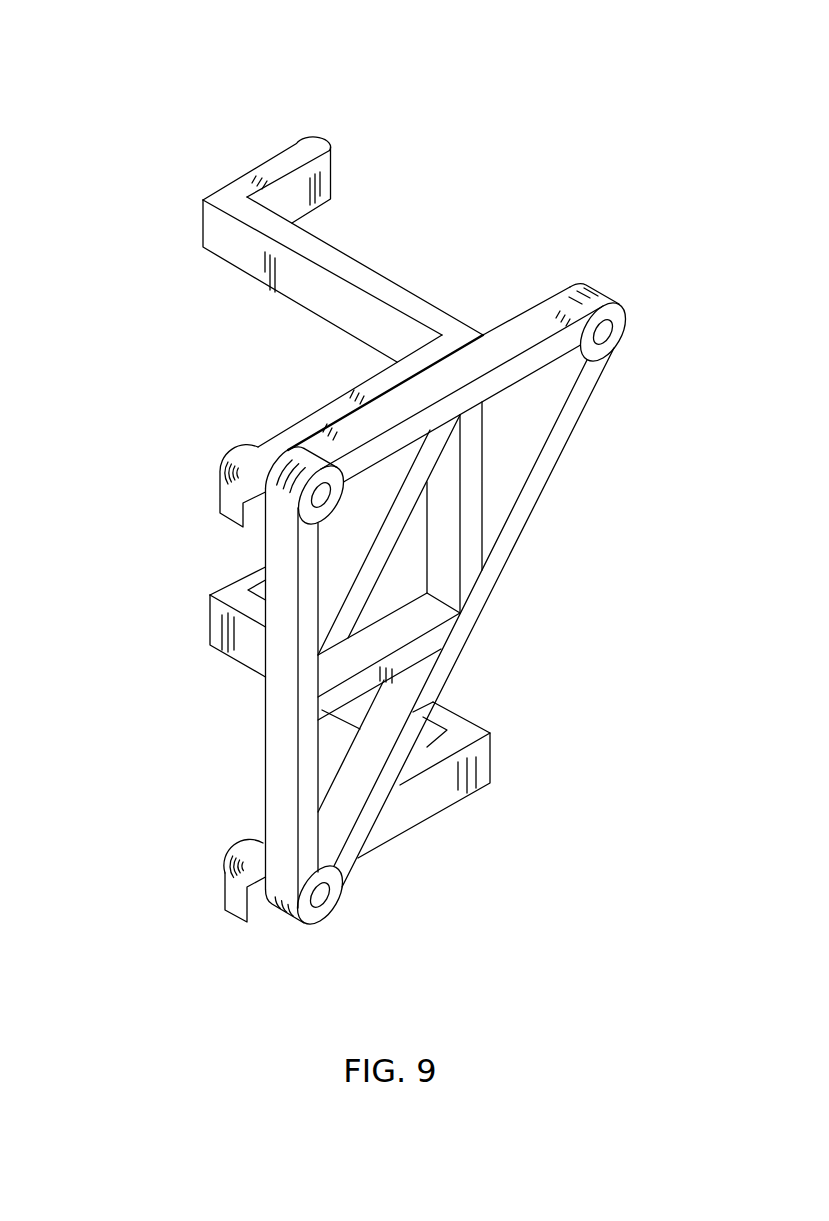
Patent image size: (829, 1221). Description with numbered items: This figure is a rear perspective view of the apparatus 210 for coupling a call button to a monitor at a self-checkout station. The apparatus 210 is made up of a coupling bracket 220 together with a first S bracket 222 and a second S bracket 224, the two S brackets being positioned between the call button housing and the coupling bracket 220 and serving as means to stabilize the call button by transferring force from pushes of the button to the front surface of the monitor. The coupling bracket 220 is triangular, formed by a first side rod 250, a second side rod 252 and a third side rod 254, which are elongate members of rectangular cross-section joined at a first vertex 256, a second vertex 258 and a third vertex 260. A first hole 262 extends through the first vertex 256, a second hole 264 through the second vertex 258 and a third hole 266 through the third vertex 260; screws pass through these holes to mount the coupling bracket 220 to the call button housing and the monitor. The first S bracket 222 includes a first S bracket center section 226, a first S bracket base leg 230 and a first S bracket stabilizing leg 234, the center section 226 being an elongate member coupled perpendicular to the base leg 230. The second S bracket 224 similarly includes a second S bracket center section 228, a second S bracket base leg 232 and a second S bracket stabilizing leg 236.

The apparatus for coupling call button to monitor 210 is at (422, 89).
The coupling bracket 220 is at (580, 522).
The first S bracket 222 is at (166, 179).
The second S bracket 224 is at (558, 776).
The first S bracket center section 226 is at (355, 272).
The second S bracket center section 228 is at (232, 636).
The first S bracket base leg 230 is at (268, 432).
The second S bracket base leg 232 is at (412, 816).
The first S bracket stabilizing leg 234 is at (275, 172).
The second S bracket stabilizing leg 236 is at (246, 587).
The first side rod 250 is at (274, 720).
The second side rod 252 is at (523, 322).
The third side rod 254 is at (468, 610).
The first vertex 256 is at (268, 490).
The second vertex 258 is at (287, 912).
The third vertex 260 is at (597, 294).
The first hole 262 is at (313, 497).
The second hole 264 is at (322, 900).
The third hole 266 is at (621, 333).